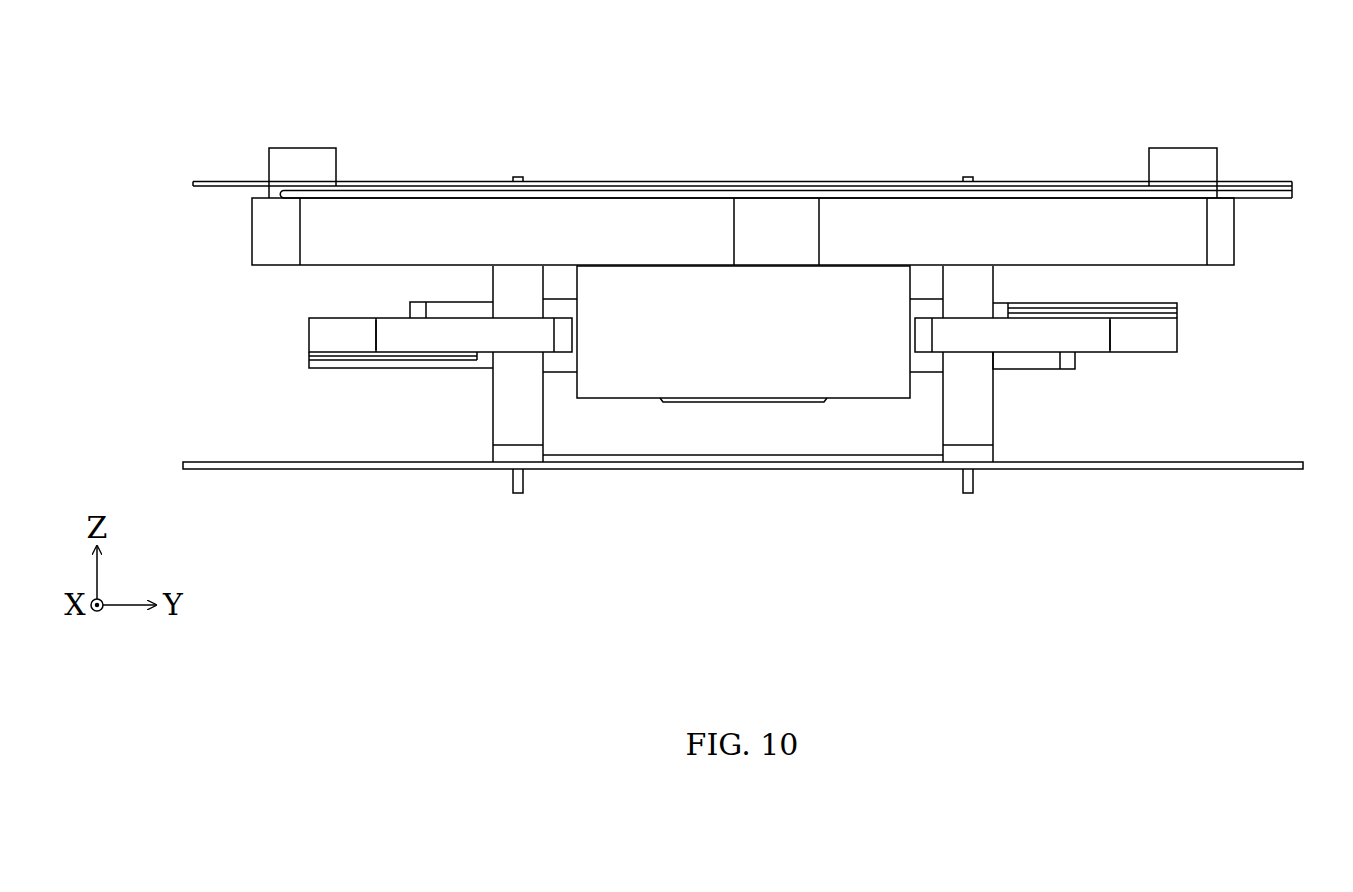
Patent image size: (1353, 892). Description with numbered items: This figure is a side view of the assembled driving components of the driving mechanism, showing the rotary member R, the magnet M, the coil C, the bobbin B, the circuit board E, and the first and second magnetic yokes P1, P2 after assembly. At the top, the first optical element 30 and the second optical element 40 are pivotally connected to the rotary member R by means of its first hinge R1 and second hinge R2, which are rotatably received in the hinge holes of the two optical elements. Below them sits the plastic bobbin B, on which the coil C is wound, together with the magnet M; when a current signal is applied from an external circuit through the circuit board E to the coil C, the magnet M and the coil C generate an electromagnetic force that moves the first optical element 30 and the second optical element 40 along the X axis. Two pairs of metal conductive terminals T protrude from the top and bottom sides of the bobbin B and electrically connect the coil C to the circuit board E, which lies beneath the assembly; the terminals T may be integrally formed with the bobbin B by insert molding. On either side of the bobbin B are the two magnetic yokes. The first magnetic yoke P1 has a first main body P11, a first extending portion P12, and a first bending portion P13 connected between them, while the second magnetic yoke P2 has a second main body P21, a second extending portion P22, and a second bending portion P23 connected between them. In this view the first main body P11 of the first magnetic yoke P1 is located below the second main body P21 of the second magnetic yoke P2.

The first optical element 30 is at (1276, 180).
The second optical element 40 is at (1276, 199).
The rotary member R is at (1237, 217).
The first hinge R1 is at (306, 158).
The second hinge R2 is at (1180, 158).
The conductive terminals T is at (518, 176).
The bobbin B is at (508, 393).
The magnet M is at (695, 377).
The coil C is at (815, 432).
The circuit board E is at (1148, 470).
The first magnetic yoke P1 is at (307, 337).
The first main body P11 is at (1068, 360).
The first extending portion P12 is at (418, 338).
The first bending portion P13 is at (346, 357).
The second magnetic yoke P2 is at (1179, 331).
The second main body P21 is at (440, 313).
The second extending portion P22 is at (1032, 338).
The second bending portion P23 is at (1152, 312).